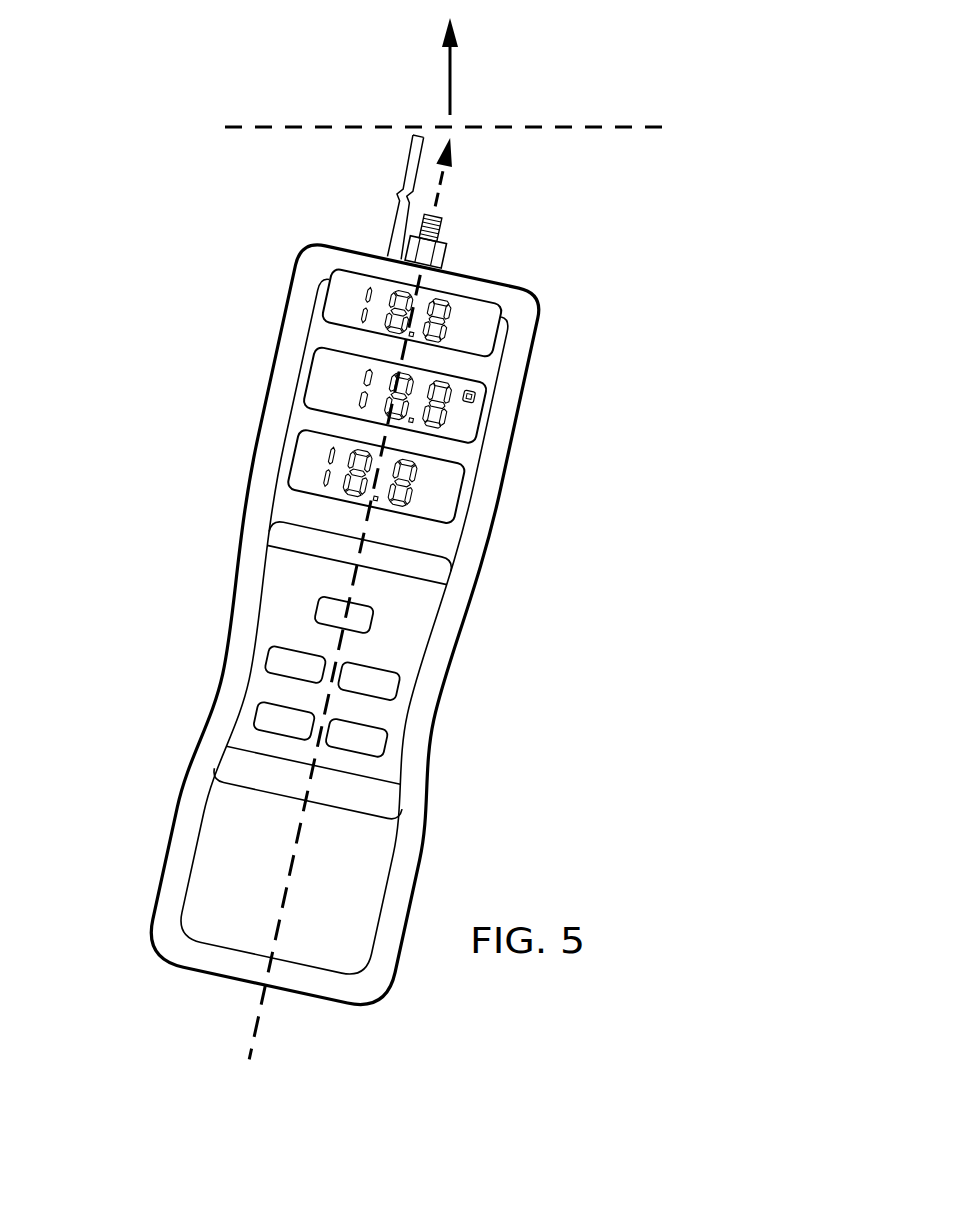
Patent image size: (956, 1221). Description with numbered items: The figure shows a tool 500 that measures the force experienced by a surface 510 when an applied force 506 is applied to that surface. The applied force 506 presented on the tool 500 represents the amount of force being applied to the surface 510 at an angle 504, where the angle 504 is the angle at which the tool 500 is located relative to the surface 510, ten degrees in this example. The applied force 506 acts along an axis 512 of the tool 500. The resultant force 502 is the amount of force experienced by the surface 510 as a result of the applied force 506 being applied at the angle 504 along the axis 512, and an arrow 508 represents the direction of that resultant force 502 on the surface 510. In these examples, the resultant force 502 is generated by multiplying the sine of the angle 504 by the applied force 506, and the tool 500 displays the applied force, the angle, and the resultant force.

The tool 500 is at (196, 296).
The resultant force 502 is at (450, 487).
The angle 504 is at (465, 415).
The applied force 506 is at (403, 199).
The arrow 508 is at (447, 78).
The surface 510 is at (602, 127).
The axis 512 is at (258, 1027).